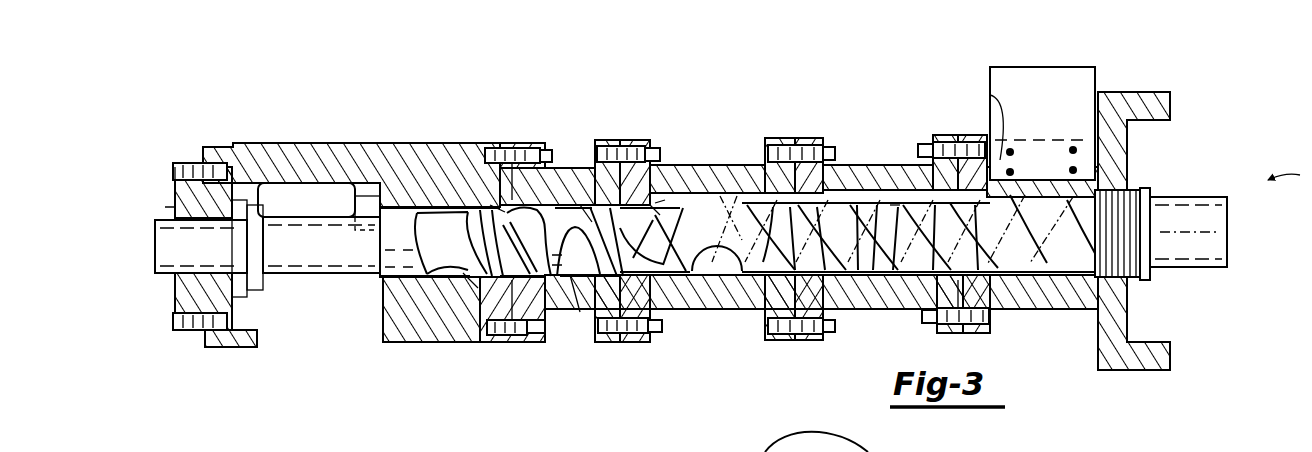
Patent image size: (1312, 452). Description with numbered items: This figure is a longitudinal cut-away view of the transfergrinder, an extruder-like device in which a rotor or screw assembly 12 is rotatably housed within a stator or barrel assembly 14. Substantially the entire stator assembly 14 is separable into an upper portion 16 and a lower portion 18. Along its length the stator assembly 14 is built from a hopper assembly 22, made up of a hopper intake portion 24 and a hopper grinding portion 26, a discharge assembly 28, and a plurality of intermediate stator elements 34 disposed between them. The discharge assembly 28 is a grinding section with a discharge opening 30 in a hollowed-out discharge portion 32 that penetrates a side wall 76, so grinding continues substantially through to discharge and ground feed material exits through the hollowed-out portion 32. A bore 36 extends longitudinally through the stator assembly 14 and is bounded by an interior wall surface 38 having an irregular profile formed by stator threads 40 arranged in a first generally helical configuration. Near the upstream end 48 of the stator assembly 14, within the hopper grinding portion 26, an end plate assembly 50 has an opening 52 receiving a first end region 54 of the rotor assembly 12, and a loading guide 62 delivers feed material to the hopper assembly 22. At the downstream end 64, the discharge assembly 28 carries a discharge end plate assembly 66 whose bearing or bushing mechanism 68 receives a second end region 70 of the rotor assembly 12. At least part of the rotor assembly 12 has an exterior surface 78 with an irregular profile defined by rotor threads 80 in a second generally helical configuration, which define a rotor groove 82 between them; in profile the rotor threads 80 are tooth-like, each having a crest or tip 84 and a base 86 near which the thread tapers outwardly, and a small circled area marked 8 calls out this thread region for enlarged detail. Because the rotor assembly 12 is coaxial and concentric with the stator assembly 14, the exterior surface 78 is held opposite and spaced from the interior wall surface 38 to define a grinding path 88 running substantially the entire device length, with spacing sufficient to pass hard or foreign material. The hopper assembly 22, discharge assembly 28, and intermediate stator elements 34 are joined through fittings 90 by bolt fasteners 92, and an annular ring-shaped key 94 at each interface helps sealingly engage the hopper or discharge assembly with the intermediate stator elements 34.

The extruder screw 8 is at (738, 213).
The rotor assembly 12 is at (732, 220).
The stator assembly 14 is at (722, 212).
The upper portion 16 is at (1130, 133).
The lower portion 18 is at (1122, 290).
The hopper assembly 22 is at (1010, 300).
The hopper intake portion 24 is at (1026, 95).
The hopper grinding portion 26 is at (1058, 309).
The discharge assembly 28 is at (406, 312).
The discharge opening 30 is at (375, 282).
The hollowed-out discharge portion 32 is at (280, 292).
The intermediate stator elements 34 is at (565, 310).
The bore 36 is at (172, 207).
The interior wall surface 38 is at (590, 220).
The stator thread 40 is at (898, 200).
The upstream end 48 is at (1122, 378).
The end plate assembly 50 is at (1167, 355).
The opening 52 is at (1135, 180).
The first end region 54 is at (1197, 228).
The loading guide 62 is at (1023, 160).
The downstream end 64 is at (160, 302).
The discharge end plate assembly 66 is at (247, 335).
The bearing or bushing mechanism 68 is at (165, 288).
The second end region 70 is at (212, 241).
The side wall 76 is at (331, 199).
The exterior surface 78 is at (452, 249).
The rotor threads 80 is at (478, 288).
The rotor groove 82 is at (500, 203).
The crest or tip 84 is at (660, 202).
The base 86 is at (660, 208).
The grinding path 88 is at (575, 312).
The fittings 90 is at (505, 345).
The bolt fasteners 92 is at (832, 320).
The annular ring-shaped key 94 is at (920, 322).